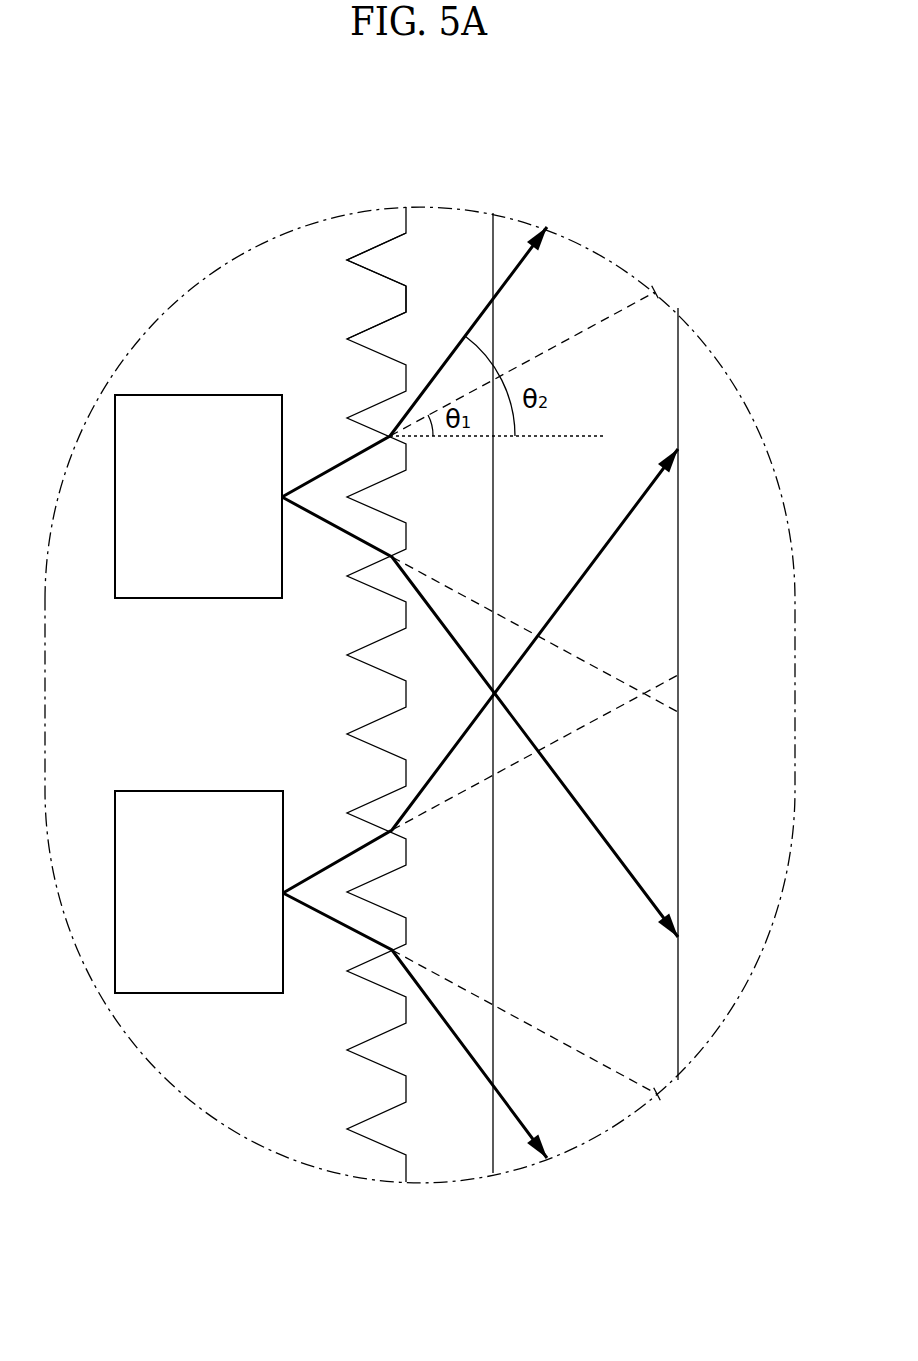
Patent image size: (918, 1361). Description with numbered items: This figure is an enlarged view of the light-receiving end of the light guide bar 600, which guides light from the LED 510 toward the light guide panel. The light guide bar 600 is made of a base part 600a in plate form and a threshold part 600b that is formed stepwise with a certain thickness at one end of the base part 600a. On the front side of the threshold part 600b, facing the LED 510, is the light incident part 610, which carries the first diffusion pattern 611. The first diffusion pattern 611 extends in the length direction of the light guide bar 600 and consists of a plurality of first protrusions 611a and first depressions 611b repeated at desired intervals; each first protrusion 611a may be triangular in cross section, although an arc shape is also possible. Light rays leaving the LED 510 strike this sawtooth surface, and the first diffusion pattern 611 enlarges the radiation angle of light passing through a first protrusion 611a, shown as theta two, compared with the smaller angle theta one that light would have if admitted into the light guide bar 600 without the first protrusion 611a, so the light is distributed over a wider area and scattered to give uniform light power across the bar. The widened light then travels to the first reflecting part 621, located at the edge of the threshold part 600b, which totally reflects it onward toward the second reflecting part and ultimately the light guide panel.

The LED 510 is at (204, 396).
The light guide bar 600 is at (503, 1268).
The base part 600a is at (300, 1125).
The threshold part 600b is at (512, 1152).
The light incident part 610 is at (447, 236).
The first diffusion pattern 611 is at (380, 146).
The first protrusion 611a is at (356, 258).
The first depression 611b is at (397, 300).
The first reflecting part 621 is at (678, 368).